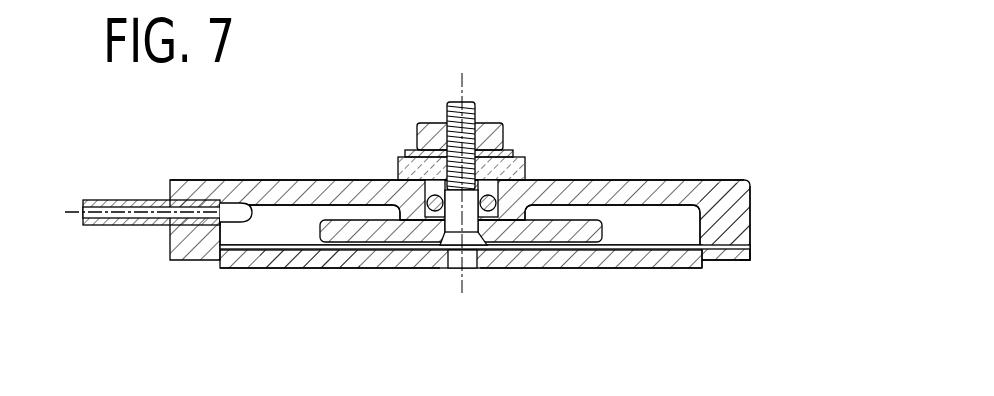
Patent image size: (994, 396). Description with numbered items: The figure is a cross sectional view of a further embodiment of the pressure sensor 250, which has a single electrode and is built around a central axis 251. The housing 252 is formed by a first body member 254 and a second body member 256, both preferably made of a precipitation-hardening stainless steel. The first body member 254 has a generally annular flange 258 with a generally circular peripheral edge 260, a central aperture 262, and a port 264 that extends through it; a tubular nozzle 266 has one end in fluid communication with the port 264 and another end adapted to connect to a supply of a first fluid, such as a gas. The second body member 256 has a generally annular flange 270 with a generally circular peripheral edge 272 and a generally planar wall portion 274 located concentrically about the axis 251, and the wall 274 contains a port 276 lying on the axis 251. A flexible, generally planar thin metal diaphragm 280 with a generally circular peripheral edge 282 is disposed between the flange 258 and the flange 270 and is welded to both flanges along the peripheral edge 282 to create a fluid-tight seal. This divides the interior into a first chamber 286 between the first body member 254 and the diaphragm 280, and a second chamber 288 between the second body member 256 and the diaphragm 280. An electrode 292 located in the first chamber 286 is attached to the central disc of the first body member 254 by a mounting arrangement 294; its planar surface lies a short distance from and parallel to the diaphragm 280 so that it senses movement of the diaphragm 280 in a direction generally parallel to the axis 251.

The pressure sensor 250 is at (628, 74).
The central axis 251 is at (463, 88).
The housing 252 is at (733, 160).
The first body member 254 is at (637, 176).
The second body member 256 is at (625, 271).
The annular flange 258 is at (725, 218).
The peripheral edge 260 is at (750, 200).
The central aperture 262 is at (530, 178).
The port 264 is at (243, 207).
The tubular nozzle 266 is at (127, 200).
The annular flange 270 is at (722, 261).
The peripheral edge 272 is at (752, 259).
The wall portion 274 is at (565, 262).
The port 276 is at (468, 269).
The diaphragm 280 is at (253, 268).
The peripheral edge 282 is at (752, 247).
The first chamber 286 is at (277, 220).
The second chamber 288 is at (290, 257).
The electrode 292 is at (603, 230).
The mounting arrangement 294 is at (505, 128).